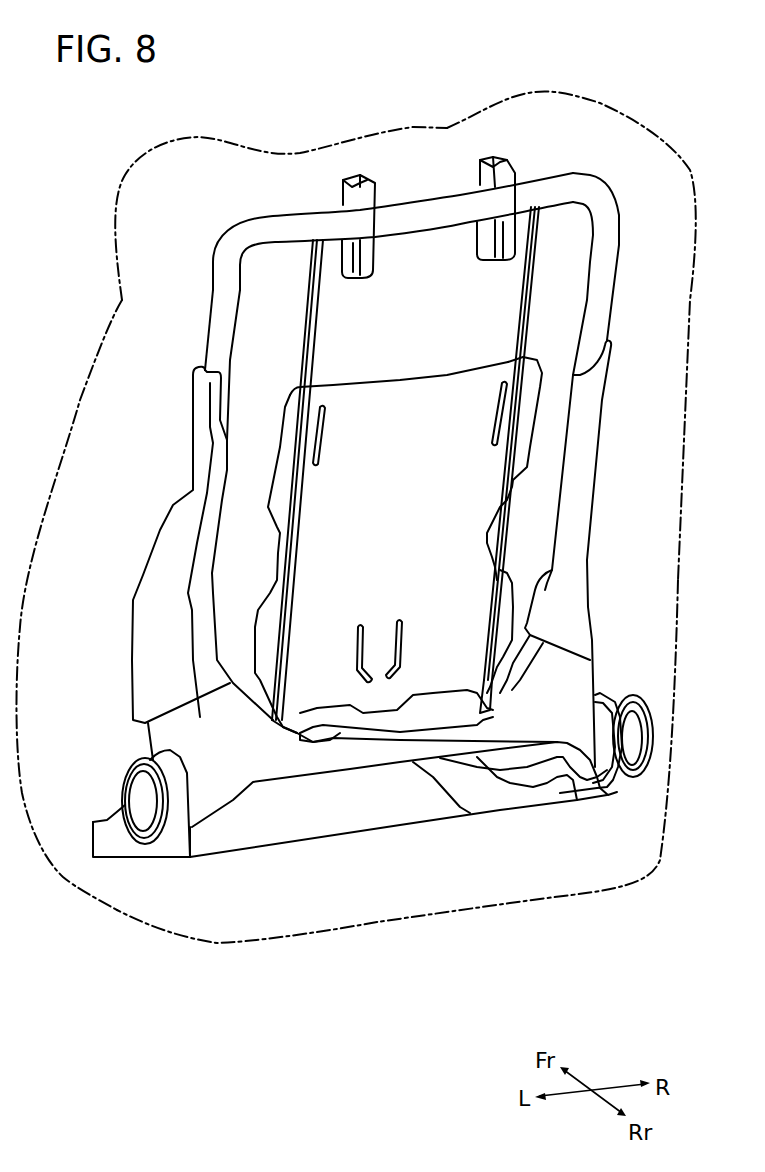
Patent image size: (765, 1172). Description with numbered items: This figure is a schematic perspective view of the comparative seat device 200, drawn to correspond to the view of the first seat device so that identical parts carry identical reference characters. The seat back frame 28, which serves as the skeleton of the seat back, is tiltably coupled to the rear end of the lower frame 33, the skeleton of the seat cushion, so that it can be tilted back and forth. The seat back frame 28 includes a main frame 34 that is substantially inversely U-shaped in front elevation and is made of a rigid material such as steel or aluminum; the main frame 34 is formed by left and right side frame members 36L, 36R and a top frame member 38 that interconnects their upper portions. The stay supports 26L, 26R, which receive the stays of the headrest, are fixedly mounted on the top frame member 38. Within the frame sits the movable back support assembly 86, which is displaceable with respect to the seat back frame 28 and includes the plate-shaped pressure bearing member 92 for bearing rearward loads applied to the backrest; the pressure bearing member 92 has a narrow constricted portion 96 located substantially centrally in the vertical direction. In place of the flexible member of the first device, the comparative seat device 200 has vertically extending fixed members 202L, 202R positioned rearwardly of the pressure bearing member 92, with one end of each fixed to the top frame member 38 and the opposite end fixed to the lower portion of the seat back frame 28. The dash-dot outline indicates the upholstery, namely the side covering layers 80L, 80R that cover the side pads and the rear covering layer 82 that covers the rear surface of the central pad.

The comparative seat device 200 is at (371, 61).
The side covering layer 80L is at (120, 200).
The side covering layer 80R is at (570, 95).
The rear covering layer 82 is at (593, 896).
The stay support 26L is at (358, 178).
The stay support 26R is at (497, 157).
The top frame member 38 is at (286, 228).
The main frame 34 is at (576, 169).
The seat back frame 28 is at (459, 255).
The pressure bearing member 92 is at (403, 392).
The movable back support assembly 86 is at (264, 413).
The constricted portion 96 is at (277, 530).
The fixed member 202L is at (300, 500).
The fixed member 202R is at (493, 586).
The side frame member 36L is at (148, 648).
The side frame member 36R is at (580, 641).
The lower frame 33 is at (107, 830).